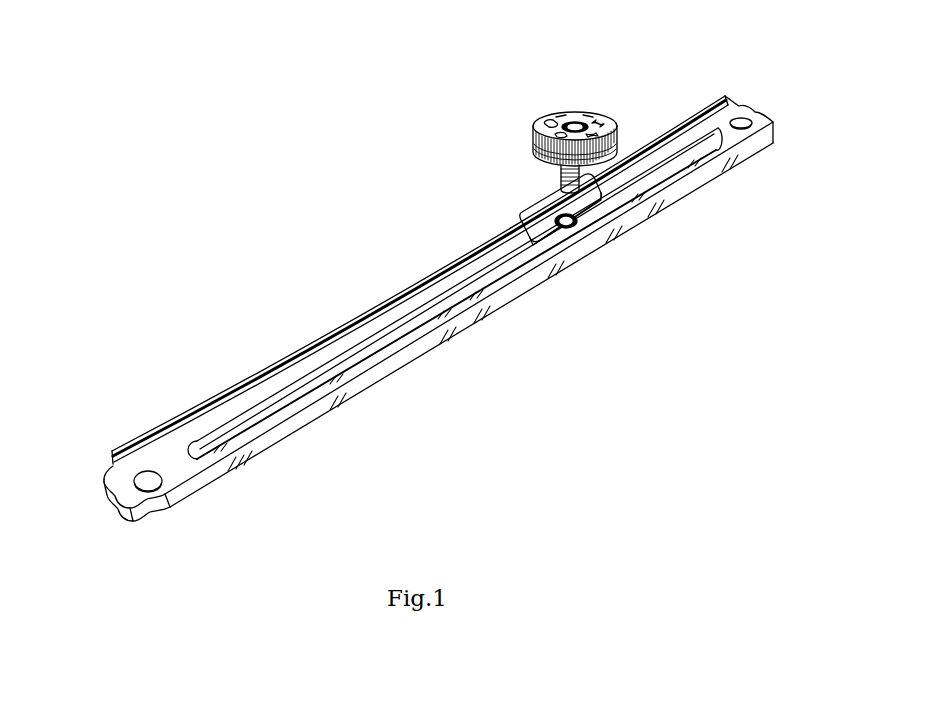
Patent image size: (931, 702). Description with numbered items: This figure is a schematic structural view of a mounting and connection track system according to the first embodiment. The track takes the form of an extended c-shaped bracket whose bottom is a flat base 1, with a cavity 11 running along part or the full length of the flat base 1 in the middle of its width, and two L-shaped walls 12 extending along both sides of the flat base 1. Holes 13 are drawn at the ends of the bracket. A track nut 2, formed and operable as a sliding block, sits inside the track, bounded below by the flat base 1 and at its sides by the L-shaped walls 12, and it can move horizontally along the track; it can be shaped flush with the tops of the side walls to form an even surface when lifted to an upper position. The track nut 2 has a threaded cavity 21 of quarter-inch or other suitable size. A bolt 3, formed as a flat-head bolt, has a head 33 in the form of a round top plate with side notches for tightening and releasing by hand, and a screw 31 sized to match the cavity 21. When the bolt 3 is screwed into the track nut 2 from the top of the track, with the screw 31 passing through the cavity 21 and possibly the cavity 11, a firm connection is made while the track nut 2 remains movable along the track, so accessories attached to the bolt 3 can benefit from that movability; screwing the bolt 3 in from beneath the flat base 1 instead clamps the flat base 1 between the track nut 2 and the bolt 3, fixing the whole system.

The flat base 1 is at (152, 457).
The cavity 11 is at (243, 420).
The L-shaped walls 12 is at (686, 117).
The end hole 13 is at (733, 122).
The track nut 2 is at (523, 213).
The cavity 21 is at (555, 196).
The bolt 3 is at (605, 116).
The screw 31 is at (556, 182).
The head 33 is at (566, 112).